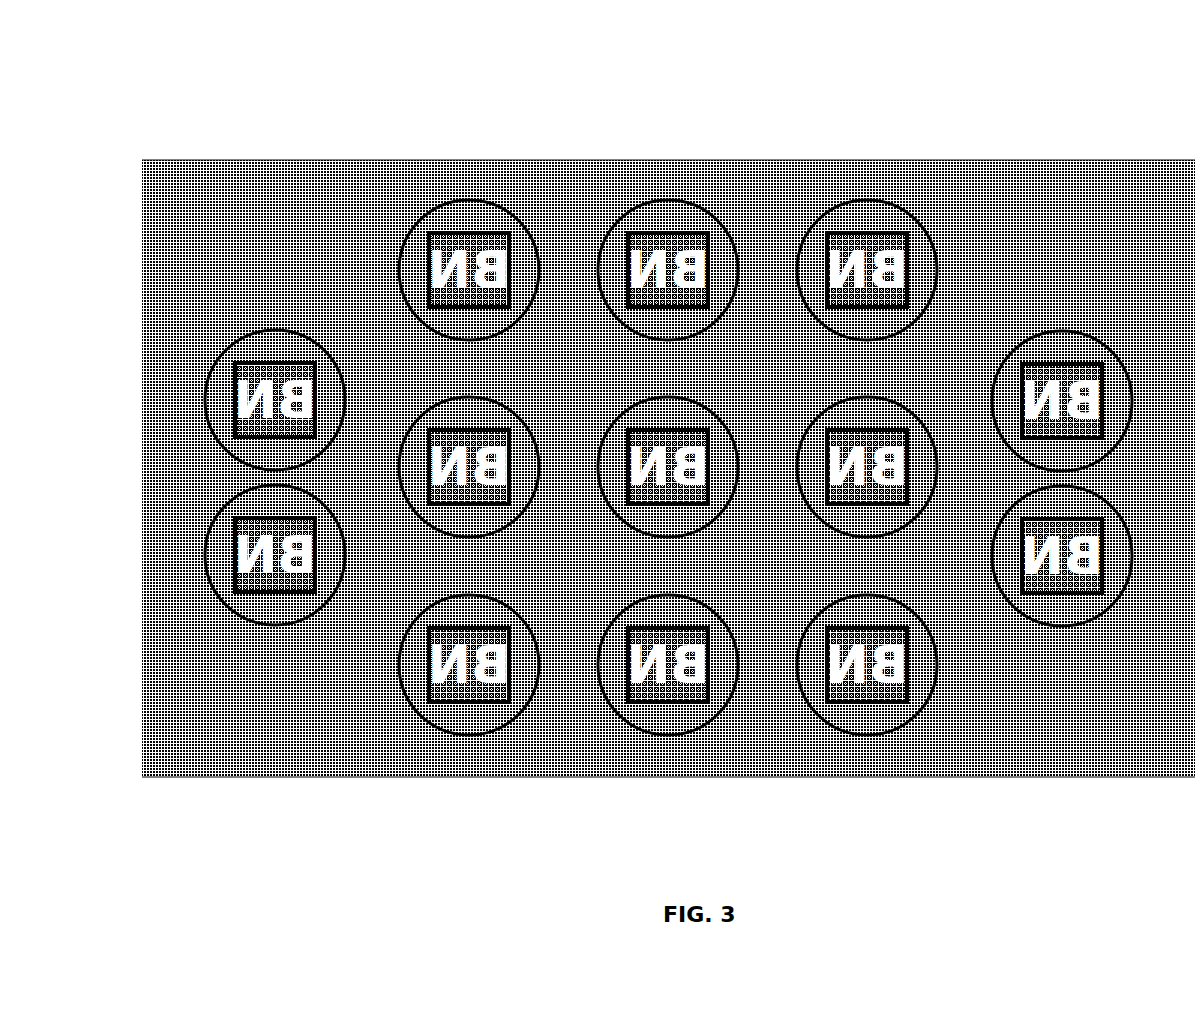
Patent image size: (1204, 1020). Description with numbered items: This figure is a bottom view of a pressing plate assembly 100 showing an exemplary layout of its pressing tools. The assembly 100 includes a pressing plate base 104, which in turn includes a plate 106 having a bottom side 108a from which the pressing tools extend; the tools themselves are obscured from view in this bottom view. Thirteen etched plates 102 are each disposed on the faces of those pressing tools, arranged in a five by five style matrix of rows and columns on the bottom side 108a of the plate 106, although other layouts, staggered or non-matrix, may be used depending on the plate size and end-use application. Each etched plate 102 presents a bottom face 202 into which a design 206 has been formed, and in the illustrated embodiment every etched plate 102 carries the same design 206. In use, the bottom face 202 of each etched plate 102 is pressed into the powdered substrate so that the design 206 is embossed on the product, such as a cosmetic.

The pressing plate assembly 100 is at (668, 428).
The etched plate 102 is at (853, 198).
The pressing plate base 104 is at (230, 156).
The plate 106 is at (733, 748).
The bottom side 108a is at (968, 748).
The bottom face 202 is at (468, 718).
The design 206 is at (473, 218).